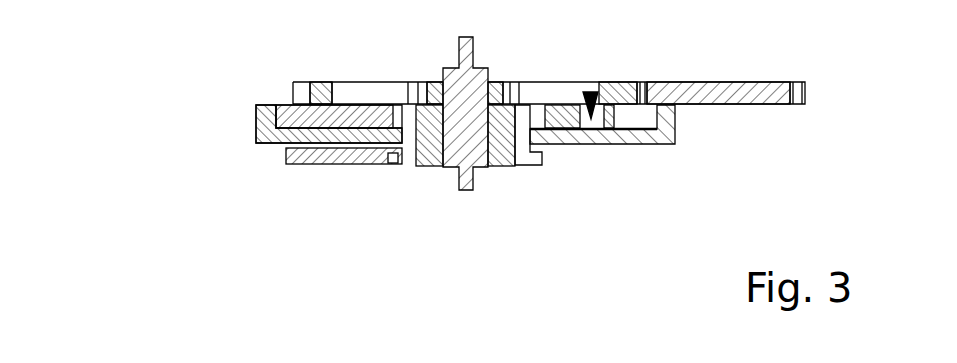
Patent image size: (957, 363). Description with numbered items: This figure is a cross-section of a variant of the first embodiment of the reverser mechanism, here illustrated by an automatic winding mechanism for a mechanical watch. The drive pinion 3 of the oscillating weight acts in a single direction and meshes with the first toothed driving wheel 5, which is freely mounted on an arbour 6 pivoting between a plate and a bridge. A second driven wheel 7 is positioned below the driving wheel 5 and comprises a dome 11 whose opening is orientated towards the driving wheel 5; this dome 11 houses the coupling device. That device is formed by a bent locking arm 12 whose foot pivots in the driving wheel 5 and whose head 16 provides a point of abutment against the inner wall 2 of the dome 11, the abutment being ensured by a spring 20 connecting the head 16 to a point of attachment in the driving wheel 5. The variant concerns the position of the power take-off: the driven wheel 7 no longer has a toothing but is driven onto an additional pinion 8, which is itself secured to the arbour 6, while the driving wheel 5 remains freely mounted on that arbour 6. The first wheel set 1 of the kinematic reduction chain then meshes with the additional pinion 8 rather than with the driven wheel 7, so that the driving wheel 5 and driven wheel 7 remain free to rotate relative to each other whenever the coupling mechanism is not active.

The first wheel set 1 is at (366, 157).
The inner wall 2 is at (669, 82).
The drive pinion 3 is at (718, 85).
The driving wheel 5 is at (618, 95).
The arbour 6 is at (484, 69).
The driven wheel 7 is at (659, 135).
The additional pinion 8 is at (508, 165).
The dome 11 is at (590, 92).
The locking arm 12 is at (572, 121).
The head 16 is at (326, 123).
The spring 20 is at (610, 118).